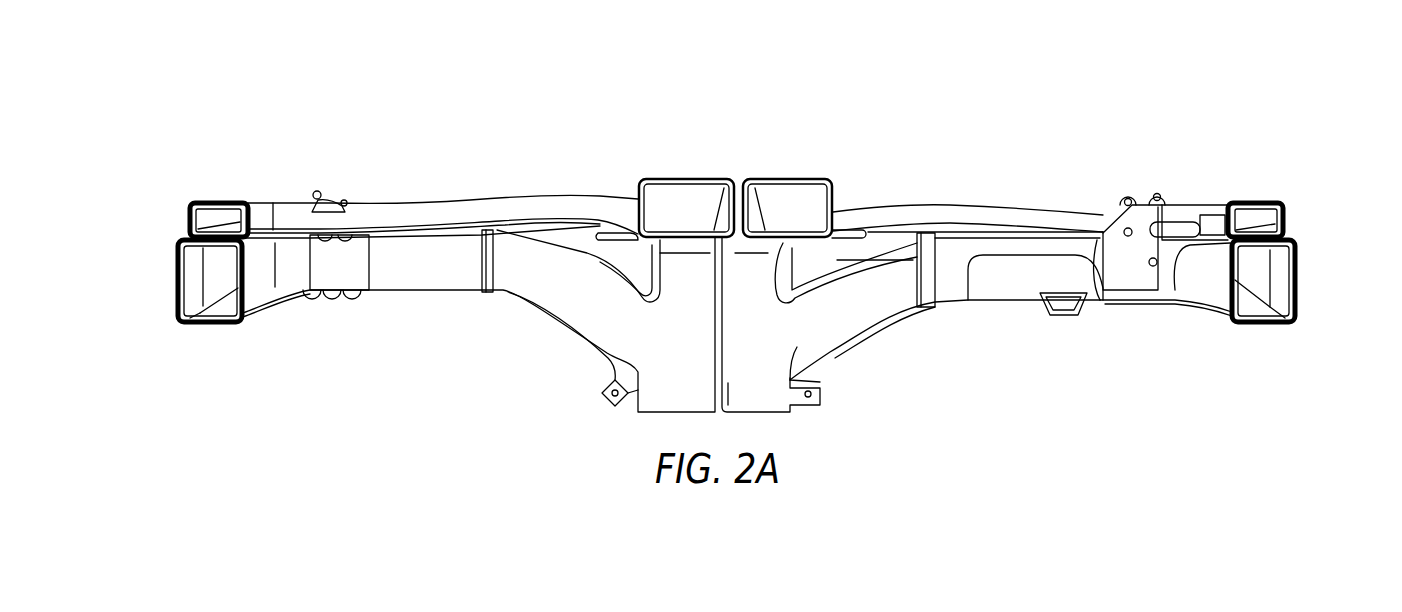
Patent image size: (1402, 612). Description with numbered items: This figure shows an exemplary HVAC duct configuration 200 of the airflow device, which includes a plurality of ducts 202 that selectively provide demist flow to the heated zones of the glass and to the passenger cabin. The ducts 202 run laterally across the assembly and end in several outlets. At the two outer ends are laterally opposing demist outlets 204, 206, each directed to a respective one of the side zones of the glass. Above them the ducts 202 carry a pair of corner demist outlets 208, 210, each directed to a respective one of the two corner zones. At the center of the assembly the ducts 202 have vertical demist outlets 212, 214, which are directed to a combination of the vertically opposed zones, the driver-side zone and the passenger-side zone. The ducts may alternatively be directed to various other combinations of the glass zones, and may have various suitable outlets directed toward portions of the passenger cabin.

The HVAC duct configuration 200 is at (118, 120).
The ducts 202 is at (458, 198).
The demist outlet 204 is at (176, 298).
The demist outlet 206 is at (1297, 302).
The corner demist outlet 208 is at (190, 218).
The corner demist outlet 210 is at (1284, 214).
The vertical demist outlet 212 is at (653, 178).
The vertical demist outlet 214 is at (686, 188).